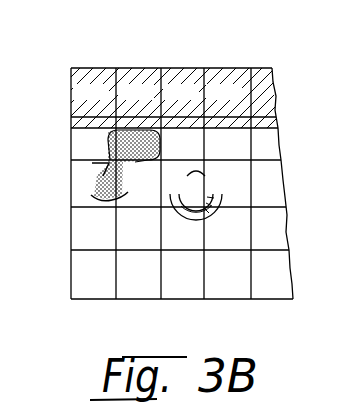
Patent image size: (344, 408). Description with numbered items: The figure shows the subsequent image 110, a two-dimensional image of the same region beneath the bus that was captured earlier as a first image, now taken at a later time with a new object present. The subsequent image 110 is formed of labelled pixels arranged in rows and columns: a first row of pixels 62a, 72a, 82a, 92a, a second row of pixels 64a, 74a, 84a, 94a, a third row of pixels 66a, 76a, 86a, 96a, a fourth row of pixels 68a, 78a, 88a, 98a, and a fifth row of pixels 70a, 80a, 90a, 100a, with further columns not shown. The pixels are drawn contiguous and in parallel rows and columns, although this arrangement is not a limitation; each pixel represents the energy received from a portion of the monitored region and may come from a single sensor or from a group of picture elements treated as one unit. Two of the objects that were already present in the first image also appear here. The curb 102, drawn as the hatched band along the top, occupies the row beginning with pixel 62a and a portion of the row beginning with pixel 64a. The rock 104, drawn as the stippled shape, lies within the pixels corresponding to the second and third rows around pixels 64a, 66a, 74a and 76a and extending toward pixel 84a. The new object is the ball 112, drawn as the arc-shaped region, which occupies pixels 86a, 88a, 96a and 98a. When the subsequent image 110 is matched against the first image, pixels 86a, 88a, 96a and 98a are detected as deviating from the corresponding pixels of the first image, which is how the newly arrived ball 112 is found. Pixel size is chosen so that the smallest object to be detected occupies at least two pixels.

The subsequent image 110 is at (190, 38).
The curb 102 is at (101, 77).
The rock 104 is at (92, 163).
The ball 112 is at (232, 198).
The pixel 62a is at (106, 99).
The pixel 72a is at (151, 99).
The pixel 82a is at (196, 99).
The pixel 92a is at (239, 99).
The pixel 64a is at (106, 153).
The pixel 74a is at (151, 153).
The pixel 84a is at (196, 153).
The pixel 94a is at (239, 153).
The pixel 66a is at (106, 193).
The pixel 76a is at (151, 193).
The pixel 86a is at (196, 193).
The pixel 96a is at (239, 193).
The pixel 68a is at (106, 238).
The pixel 78a is at (151, 238).
The pixel 88a is at (196, 238).
The pixel 98a is at (239, 238).
The pixel 70a is at (106, 285).
The pixel 80a is at (151, 285).
The pixel 90a is at (196, 285).
The pixel 100a is at (246, 285).